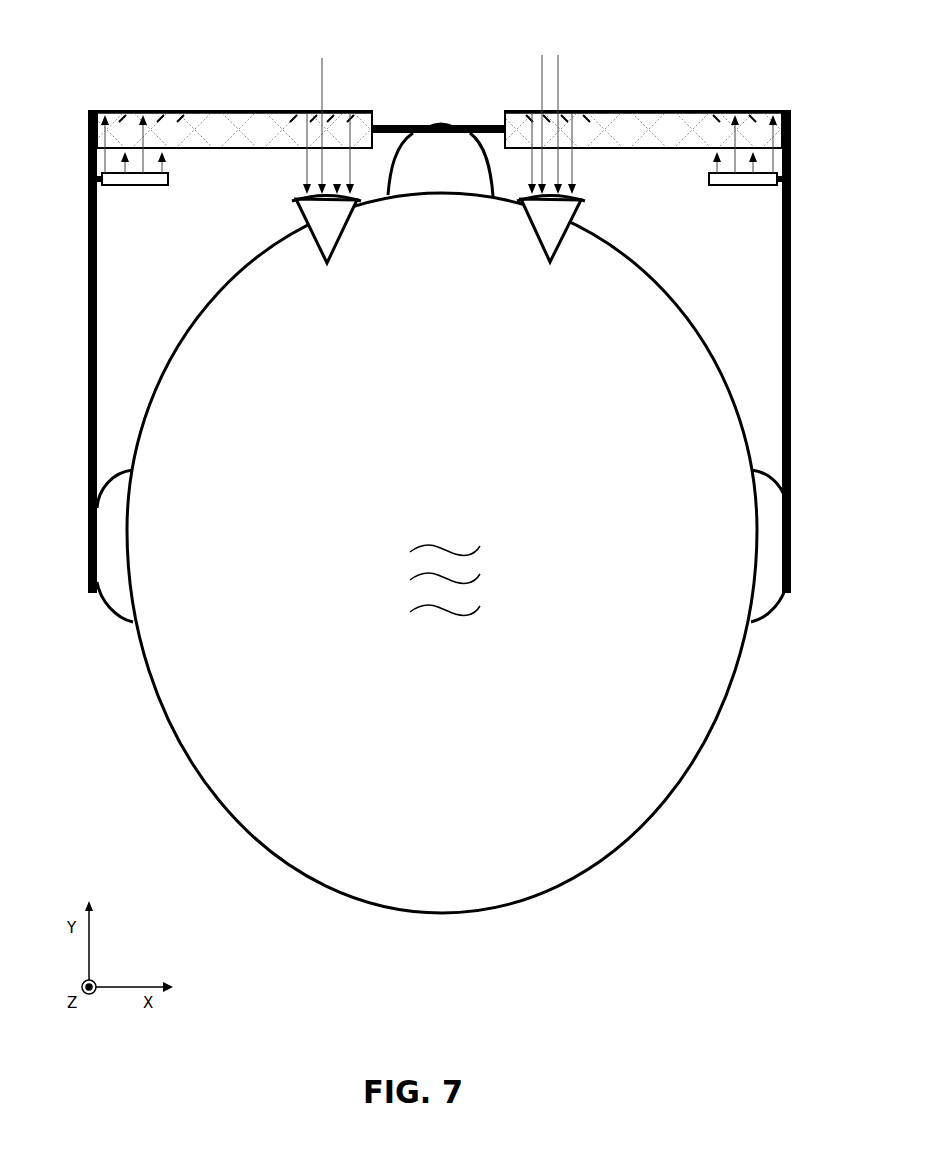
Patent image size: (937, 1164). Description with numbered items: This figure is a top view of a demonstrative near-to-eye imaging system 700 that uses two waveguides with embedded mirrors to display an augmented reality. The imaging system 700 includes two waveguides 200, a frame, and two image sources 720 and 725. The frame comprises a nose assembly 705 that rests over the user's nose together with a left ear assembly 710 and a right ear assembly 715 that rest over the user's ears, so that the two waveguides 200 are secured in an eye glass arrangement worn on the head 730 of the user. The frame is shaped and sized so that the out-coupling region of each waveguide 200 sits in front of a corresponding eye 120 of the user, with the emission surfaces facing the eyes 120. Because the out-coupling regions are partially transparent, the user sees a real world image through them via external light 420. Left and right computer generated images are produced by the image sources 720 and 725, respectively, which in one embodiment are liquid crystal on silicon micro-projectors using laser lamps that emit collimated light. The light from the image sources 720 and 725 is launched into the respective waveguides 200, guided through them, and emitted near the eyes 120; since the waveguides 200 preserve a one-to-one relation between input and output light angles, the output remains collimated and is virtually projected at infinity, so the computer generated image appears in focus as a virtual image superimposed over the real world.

The near-to-eye imaging system 700 is at (107, 66).
The eye 120 is at (336, 250).
The waveguide 200 is at (236, 111).
The external light 420 is at (324, 58).
The nose assembly 705 is at (483, 124).
The left ear assembly 710 is at (88, 350).
The right ear assembly 715 is at (791, 350).
The image source 720 is at (148, 186).
The image source 725 is at (729, 186).
The head 730 is at (455, 761).